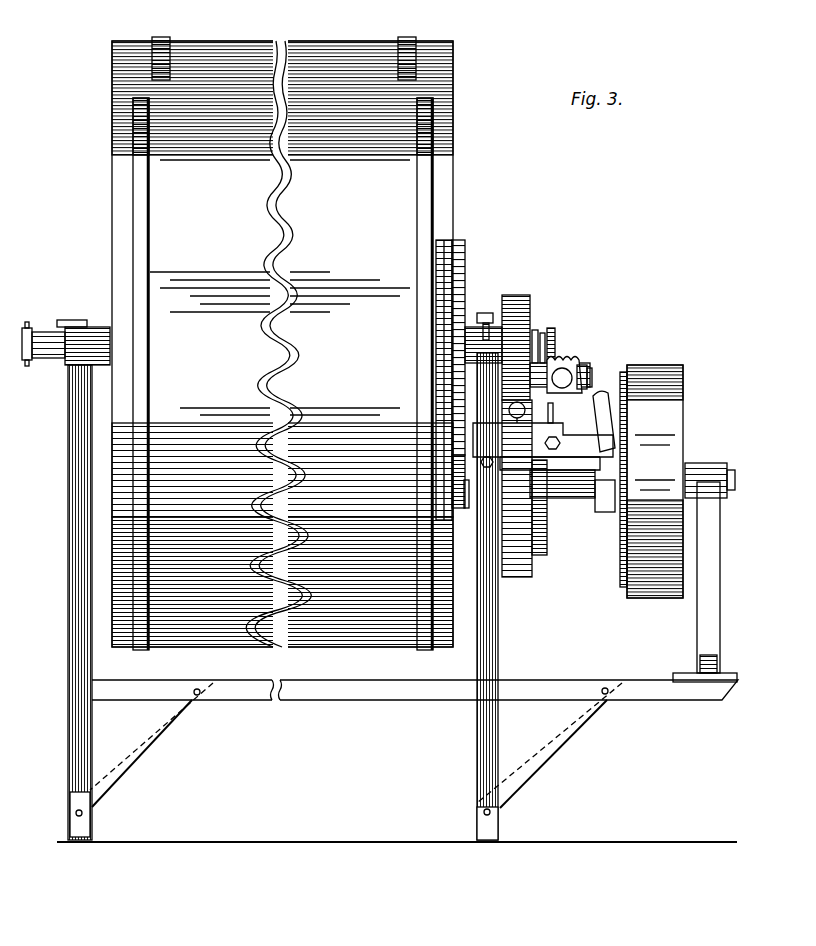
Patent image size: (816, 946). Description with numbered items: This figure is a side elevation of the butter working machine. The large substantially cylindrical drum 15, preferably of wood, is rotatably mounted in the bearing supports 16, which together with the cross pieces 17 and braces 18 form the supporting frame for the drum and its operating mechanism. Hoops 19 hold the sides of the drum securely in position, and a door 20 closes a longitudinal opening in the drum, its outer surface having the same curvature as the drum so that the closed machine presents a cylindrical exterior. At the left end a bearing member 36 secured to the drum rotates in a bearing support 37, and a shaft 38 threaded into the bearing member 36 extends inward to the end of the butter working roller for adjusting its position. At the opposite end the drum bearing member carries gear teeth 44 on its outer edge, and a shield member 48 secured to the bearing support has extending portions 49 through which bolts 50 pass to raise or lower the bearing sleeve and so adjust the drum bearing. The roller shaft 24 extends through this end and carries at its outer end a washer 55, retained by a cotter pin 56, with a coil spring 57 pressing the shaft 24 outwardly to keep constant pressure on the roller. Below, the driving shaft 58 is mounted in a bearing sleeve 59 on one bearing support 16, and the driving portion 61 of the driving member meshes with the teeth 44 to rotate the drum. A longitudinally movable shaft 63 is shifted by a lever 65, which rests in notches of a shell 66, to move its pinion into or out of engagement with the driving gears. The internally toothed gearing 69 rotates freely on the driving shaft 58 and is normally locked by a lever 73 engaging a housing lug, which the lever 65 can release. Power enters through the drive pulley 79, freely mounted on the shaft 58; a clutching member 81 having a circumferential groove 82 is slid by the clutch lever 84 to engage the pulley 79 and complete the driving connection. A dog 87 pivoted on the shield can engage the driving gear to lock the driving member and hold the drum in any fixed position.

The drum 15 is at (443, 186).
The bearing supports 16 is at (80, 483).
The cross pieces 17 is at (323, 695).
The braces 18 is at (133, 757).
The hoops 19 is at (143, 180).
The door 20 is at (337, 41).
The shaft 24 is at (556, 342).
The bearing member 36 is at (110, 325).
The bearing support 37 is at (68, 366).
The shaft 38 is at (27, 361).
The gear teeth 44 is at (463, 241).
The shield member 48 is at (507, 295).
The extending portions 49 is at (475, 350).
The bolts 50 is at (486, 312).
The washer 55 is at (544, 334).
The cotter pin 56 is at (553, 338).
The spring 57 is at (537, 330).
The driving shaft 58 is at (735, 486).
The bearing sleeve 59 is at (458, 509).
The driving portion 61 is at (466, 509).
The shaft 63 is at (590, 377).
The lever 65 is at (577, 372).
The shell 66 is at (570, 366).
The internally toothed gearing 69 is at (560, 498).
The lever 73 is at (553, 412).
The drive pulley 79 is at (655, 481).
The clutching member 81 is at (620, 563).
The circumferential groove 82 is at (600, 512).
The lever 84 is at (602, 420).
The dog 87 is at (518, 423).